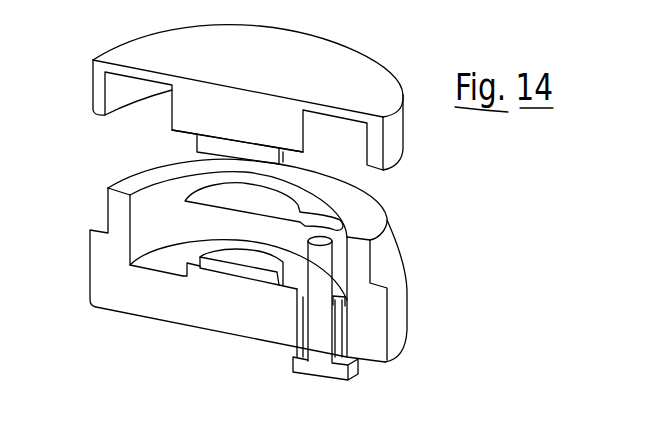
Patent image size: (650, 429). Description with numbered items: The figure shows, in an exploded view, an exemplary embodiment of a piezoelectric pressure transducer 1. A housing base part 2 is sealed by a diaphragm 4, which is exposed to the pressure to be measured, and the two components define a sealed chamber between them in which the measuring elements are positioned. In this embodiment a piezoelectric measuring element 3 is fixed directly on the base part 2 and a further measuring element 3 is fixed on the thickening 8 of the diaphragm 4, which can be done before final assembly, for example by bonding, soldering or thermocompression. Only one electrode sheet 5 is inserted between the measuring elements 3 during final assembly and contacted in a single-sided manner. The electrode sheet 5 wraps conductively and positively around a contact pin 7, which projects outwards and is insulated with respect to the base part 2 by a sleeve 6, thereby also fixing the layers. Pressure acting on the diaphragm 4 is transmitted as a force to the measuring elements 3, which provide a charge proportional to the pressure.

The piezoelectric pressure transducer 1 is at (110, 147).
The housing base part 2 is at (208, 333).
The piezoelectric measuring element 3 is at (227, 147).
The diaphragm 4 is at (333, 110).
The electrode sheet 5 is at (212, 210).
The sleeve 6 is at (303, 330).
The contact pin 7 is at (323, 270).
The thickening of the diaphragm 8 is at (205, 102).